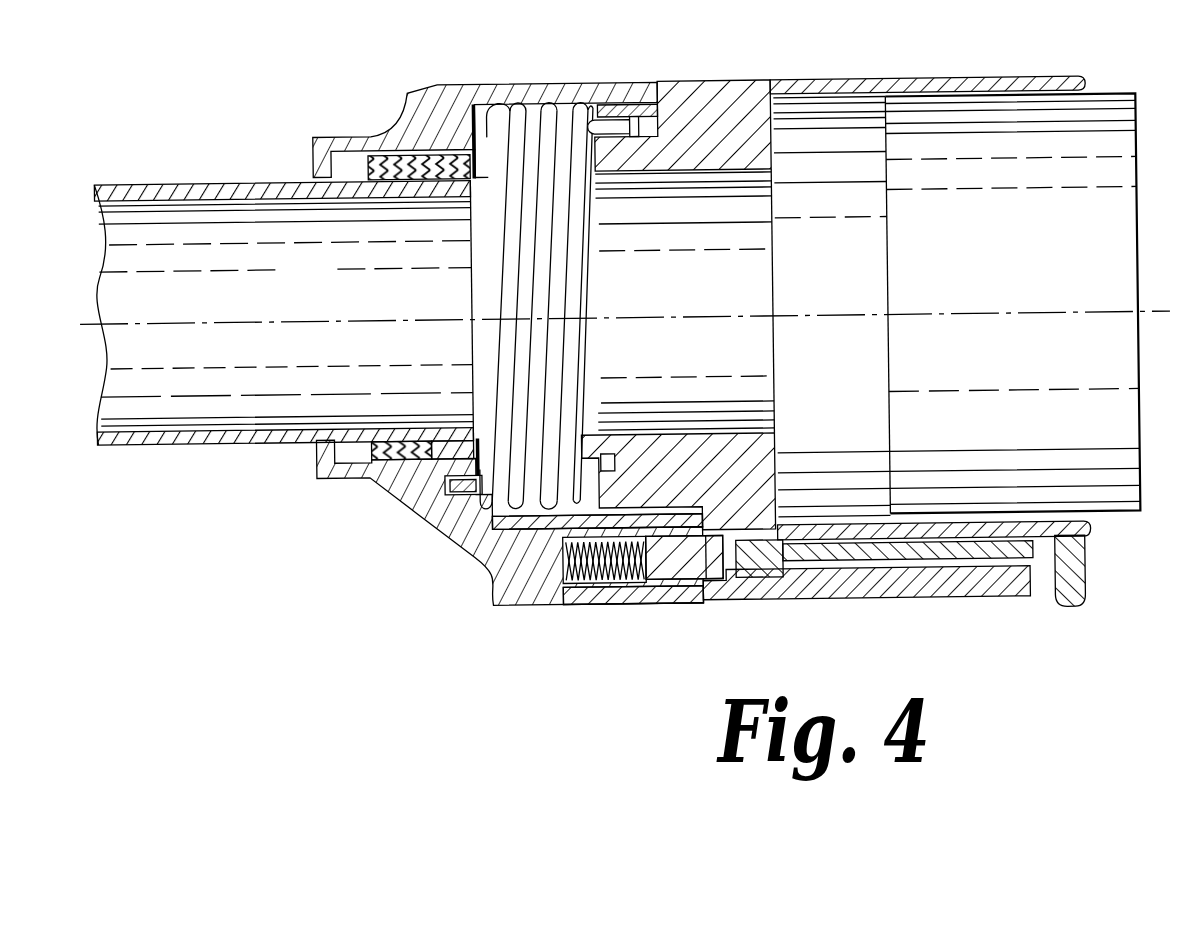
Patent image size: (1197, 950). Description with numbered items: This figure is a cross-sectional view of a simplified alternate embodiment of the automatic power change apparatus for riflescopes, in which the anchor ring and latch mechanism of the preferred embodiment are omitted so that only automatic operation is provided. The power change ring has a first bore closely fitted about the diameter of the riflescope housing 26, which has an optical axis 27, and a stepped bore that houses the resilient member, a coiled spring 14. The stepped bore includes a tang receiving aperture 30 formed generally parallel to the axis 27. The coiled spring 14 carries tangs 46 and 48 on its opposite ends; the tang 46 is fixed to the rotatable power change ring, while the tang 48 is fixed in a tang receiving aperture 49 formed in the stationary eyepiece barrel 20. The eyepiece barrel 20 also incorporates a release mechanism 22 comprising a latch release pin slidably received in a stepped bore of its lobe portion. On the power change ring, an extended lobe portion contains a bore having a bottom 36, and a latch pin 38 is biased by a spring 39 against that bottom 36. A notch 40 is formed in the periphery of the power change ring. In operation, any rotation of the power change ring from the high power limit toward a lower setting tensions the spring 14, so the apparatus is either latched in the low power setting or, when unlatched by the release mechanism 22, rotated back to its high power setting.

The resilient member 14 is at (593, 256).
The eyepiece barrel 20 is at (878, 82).
The release mechanism 22 is at (1088, 582).
The riflescope housing 26 is at (265, 442).
The axis 27 is at (338, 311).
The tang receiving aperture 30 is at (472, 556).
The bottom 36 is at (533, 606).
The latch pin 38 is at (668, 606).
The spring 39 is at (597, 596).
The notch 40 is at (507, 102).
The tang 46 is at (410, 516).
The tang 48 is at (598, 120).
The tang receiving aperture 49 is at (690, 97).